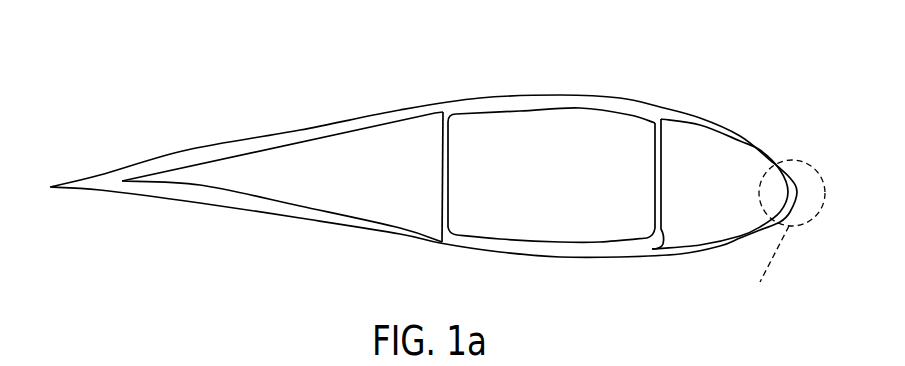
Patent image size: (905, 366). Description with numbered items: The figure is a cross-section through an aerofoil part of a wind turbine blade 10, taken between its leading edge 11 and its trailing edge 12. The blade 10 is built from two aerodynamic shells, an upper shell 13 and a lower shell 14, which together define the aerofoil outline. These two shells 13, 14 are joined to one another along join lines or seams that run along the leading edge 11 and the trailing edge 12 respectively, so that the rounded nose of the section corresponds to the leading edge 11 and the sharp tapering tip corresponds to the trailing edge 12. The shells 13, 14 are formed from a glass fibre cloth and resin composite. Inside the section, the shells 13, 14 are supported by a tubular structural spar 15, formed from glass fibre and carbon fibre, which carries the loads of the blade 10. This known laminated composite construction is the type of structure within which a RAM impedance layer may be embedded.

The wind turbine blade 10 is at (615, 62).
The leading edge 11 is at (805, 182).
The trailing edge 12 is at (40, 188).
The upper shell 13 is at (550, 97).
The lower shell 14 is at (460, 248).
The tubular structural spar 15 is at (567, 232).